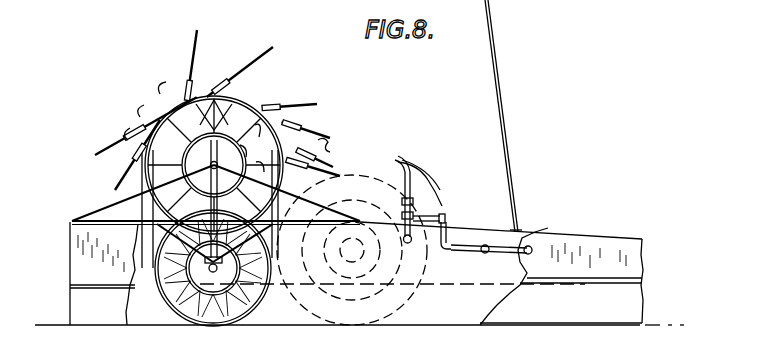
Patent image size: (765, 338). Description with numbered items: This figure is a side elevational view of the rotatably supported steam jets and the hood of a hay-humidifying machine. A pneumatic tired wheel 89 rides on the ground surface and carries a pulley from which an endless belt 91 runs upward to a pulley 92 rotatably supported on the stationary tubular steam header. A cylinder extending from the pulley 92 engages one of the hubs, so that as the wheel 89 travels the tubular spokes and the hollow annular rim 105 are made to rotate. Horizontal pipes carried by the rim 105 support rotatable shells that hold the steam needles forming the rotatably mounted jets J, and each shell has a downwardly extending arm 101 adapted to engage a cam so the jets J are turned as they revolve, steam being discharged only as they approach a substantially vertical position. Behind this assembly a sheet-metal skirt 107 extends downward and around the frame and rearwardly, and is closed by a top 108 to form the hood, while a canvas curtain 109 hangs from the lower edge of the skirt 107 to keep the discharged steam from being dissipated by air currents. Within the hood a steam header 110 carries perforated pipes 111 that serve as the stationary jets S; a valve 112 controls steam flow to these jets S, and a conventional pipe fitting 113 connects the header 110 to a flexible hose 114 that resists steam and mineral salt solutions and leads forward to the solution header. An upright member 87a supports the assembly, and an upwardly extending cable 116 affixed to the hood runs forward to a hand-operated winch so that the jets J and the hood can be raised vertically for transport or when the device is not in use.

The upright member 87a is at (118, 212).
The pneumatic tired wheel 89 is at (250, 314).
The endless belt 91 is at (143, 238).
The pulley 92 is at (186, 152).
The downwardly extending arm 101 is at (257, 103).
The hollow annular rim 105 is at (163, 111).
The skirt 107 is at (82, 262).
The top 108 is at (100, 232).
The canvas curtain 109 is at (90, 303).
The steam header 110 is at (452, 252).
The perforated pipes 111 is at (515, 256).
The valve 112 is at (442, 172).
The pipe fitting 113 is at (430, 198).
The flexible hose 114 is at (412, 172).
The cable 116 is at (508, 127).
The rotatably mounted jets J is at (326, 137).
The stationary jets S is at (543, 218).